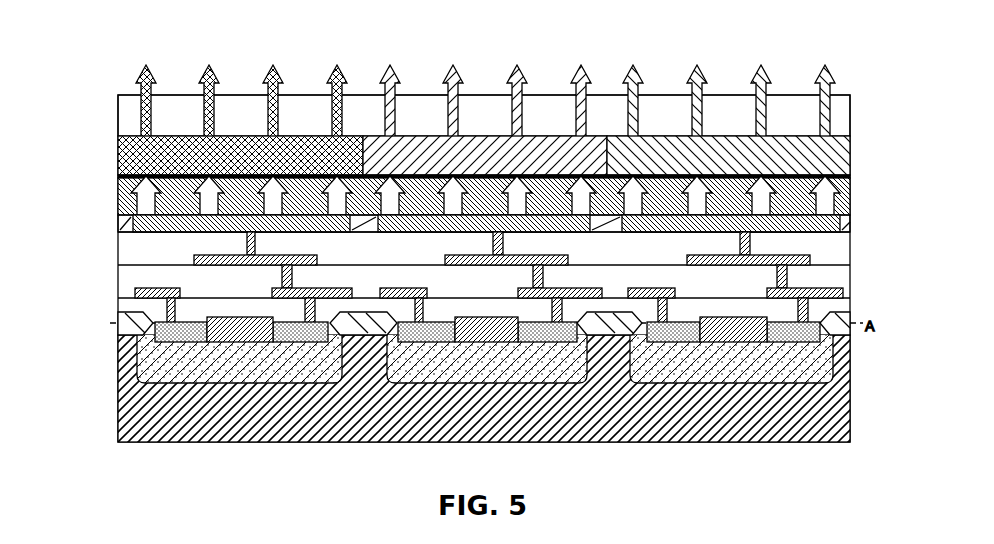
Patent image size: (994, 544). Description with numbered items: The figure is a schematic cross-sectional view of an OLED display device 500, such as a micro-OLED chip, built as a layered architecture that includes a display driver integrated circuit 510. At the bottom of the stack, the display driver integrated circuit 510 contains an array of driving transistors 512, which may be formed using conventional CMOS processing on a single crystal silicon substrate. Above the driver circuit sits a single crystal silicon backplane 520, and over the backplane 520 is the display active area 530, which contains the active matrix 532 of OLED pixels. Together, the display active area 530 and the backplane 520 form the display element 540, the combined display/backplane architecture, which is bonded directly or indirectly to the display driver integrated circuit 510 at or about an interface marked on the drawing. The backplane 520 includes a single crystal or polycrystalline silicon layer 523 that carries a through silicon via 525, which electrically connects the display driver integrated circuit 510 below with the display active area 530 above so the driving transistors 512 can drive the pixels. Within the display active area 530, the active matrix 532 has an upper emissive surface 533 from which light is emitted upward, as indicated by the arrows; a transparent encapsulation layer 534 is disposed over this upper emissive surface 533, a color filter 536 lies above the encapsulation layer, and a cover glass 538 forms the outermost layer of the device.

The OLED display device 500 is at (38, 23).
The display driver integrated circuit 510 is at (487, 377).
The driving transistors 512 is at (817, 365).
The backplane 520 is at (493, 277).
The silicon layer 523 is at (833, 277).
The through silicon via 525 is at (807, 260).
The display active area 530 is at (497, 160).
The active matrix 532 is at (847, 227).
The upper emissive surface 533 is at (853, 228).
The transparent encapsulation layer 534 is at (800, 178).
The color filter 536 is at (843, 153).
The cover glass 538 is at (840, 123).
The display element 540 is at (470, 194).